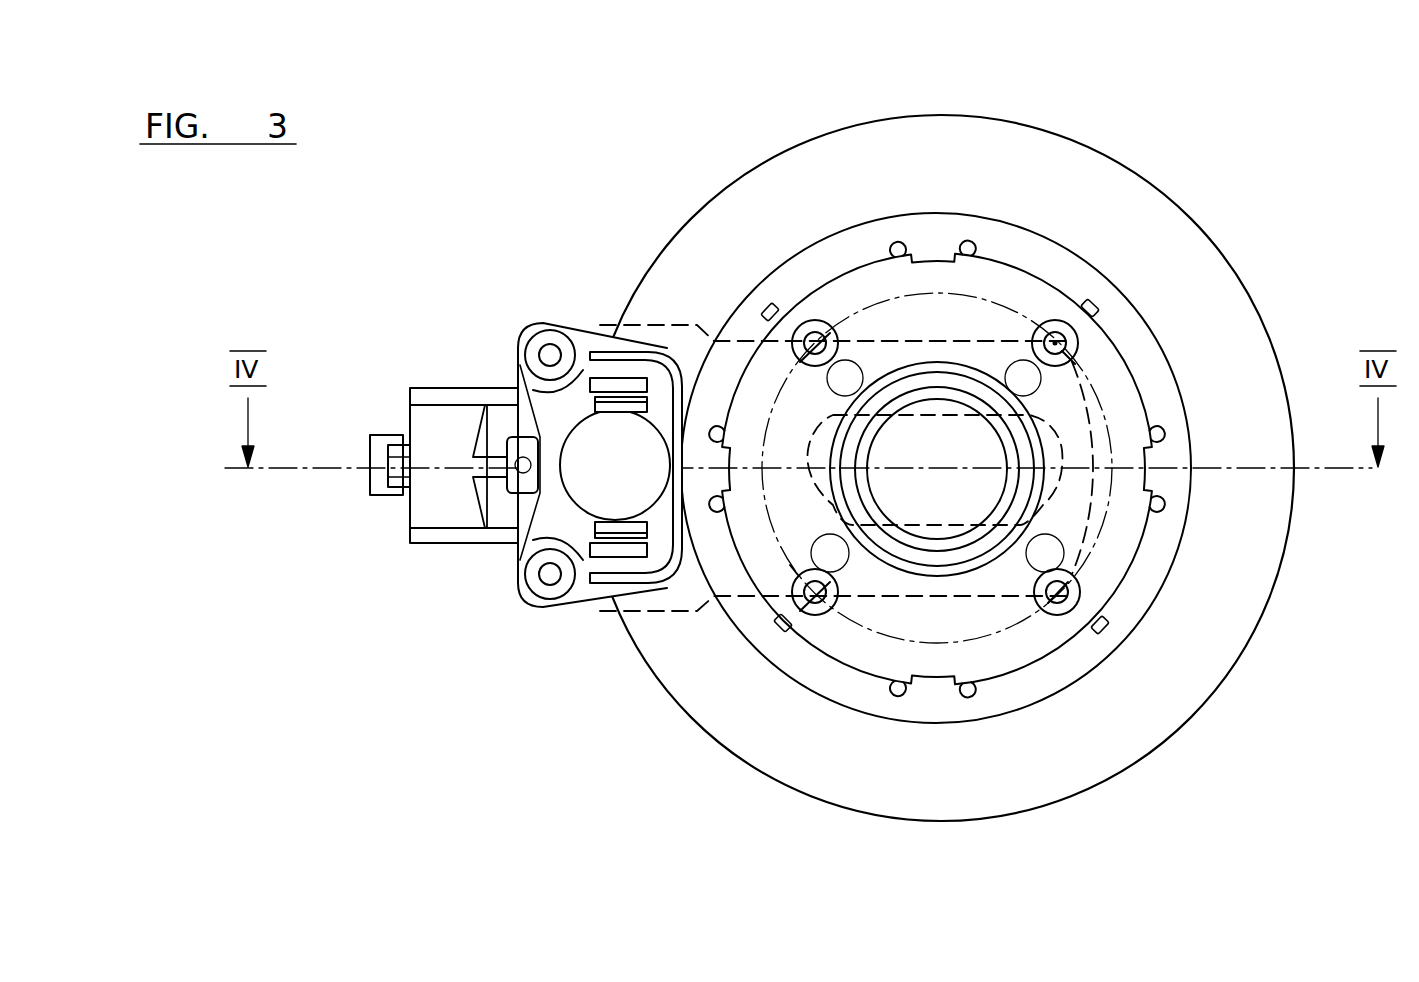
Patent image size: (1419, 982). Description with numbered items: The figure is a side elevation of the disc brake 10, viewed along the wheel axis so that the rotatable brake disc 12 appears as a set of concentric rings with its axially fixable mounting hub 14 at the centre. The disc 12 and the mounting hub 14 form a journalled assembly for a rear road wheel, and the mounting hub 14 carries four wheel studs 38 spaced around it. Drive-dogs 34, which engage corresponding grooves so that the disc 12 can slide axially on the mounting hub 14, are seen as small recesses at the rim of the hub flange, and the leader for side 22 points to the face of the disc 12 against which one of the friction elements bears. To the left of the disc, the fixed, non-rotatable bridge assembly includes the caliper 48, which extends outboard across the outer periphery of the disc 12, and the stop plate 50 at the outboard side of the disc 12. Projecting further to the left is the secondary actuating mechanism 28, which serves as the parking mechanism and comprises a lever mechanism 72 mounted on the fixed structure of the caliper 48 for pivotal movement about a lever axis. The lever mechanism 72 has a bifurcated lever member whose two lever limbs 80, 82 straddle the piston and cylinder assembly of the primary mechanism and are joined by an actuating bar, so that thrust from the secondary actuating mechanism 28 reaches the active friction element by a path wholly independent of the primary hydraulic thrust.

The disc brake 10 is at (512, 283).
The brake disc 12 is at (1150, 186).
The mounting hub 14 is at (1137, 570).
The side of disc 22 is at (1253, 522).
The secondary actuating mechanism 28 is at (398, 549).
The drive-dogs 34 is at (931, 253).
The wheel studs 38 is at (813, 320).
The caliper 48 is at (527, 606).
The stop plate 50 is at (652, 568).
The lever mechanism 72 is at (400, 375).
The lever limb 80 is at (470, 388).
The lever limb 82 is at (458, 543).